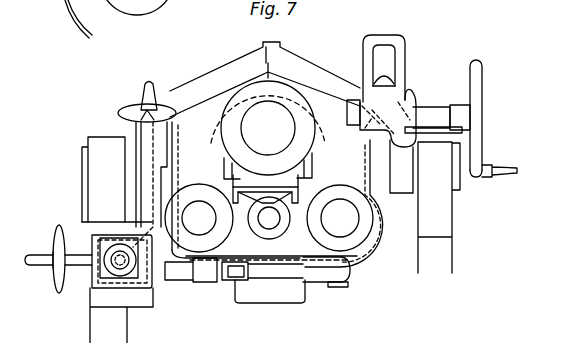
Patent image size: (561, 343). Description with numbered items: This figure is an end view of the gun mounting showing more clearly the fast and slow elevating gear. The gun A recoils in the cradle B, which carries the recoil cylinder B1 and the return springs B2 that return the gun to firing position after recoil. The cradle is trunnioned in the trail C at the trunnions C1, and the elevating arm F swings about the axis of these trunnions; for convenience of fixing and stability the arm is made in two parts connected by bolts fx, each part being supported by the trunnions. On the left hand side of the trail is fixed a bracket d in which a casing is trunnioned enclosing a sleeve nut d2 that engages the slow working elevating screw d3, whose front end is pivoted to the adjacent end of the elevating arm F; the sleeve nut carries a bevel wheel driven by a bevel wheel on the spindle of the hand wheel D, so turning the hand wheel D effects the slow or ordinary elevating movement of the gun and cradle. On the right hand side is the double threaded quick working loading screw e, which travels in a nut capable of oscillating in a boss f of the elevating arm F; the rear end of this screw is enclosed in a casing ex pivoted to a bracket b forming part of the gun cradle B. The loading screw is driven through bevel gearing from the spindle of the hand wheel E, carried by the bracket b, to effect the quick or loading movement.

The gun A is at (268, 128).
The cradle B is at (261, 271).
The recoil cylinder B1 is at (269, 218).
The return springs B2 is at (269, 218).
The trail C is at (121, 315).
The trunnions C1 is at (271, 205).
The hand wheel D is at (57, 276).
The hand wheel E is at (478, 107).
The elevating arm F is at (72, 186).
The bracket b is at (426, 160).
The bracket d is at (142, 294).
The sleeve nut d2 is at (110, 244).
The elevating screw d3 is at (120, 262).
The loading screw e is at (370, 92).
The casing ex is at (388, 118).
The boss f is at (383, 49).
The bolts fx is at (281, 44).